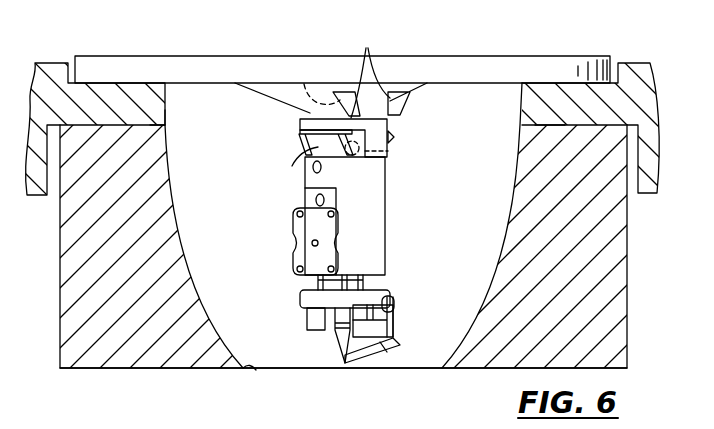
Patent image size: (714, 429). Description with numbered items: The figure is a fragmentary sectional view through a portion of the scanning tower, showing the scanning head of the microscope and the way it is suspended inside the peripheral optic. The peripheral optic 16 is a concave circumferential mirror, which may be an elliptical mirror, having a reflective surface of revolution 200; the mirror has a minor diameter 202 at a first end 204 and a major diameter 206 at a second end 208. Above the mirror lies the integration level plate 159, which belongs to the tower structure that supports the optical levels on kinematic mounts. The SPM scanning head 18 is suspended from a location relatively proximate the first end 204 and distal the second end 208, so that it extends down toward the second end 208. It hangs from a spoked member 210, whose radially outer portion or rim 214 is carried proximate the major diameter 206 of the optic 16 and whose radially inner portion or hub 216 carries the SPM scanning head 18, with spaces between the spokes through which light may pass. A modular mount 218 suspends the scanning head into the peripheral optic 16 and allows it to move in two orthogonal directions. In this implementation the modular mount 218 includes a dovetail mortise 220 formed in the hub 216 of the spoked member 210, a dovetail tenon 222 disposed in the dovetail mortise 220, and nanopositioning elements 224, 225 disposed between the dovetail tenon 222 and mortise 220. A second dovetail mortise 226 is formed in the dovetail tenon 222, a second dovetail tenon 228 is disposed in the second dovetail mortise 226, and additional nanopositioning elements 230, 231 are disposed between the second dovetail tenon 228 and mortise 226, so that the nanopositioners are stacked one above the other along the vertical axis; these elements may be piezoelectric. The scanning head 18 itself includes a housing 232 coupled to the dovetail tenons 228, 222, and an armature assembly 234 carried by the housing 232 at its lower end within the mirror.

The peripheral optic 16 is at (648, 286).
The SPM scanning head 18 is at (322, 195).
The integration level plate 159 is at (630, 101).
The reflective surface of revolution 200 is at (497, 266).
The minor diameter 202 is at (256, 370).
The first end 204 is at (470, 370).
The major diameter 206 is at (165, 125).
The second end 208 is at (548, 125).
The spoked member 210 is at (474, 37).
The rim 214 is at (594, 72).
The hub 216 is at (303, 109).
The modular mount 218 is at (283, 129).
The dovetail mortise 220 is at (367, 73).
The dovetail tenon 222 is at (394, 108).
The nanopositioning element 224 is at (315, 84).
The nanopositioning element 225 is at (281, 73).
The second dovetail mortise 226 is at (318, 148).
The second dovetail tenon 228 is at (300, 159).
The additional nanopositioning element 230 is at (388, 151).
The additional nanopositioning element 231 is at (394, 137).
The housing 232 is at (390, 247).
The armature assembly 234 is at (300, 284).